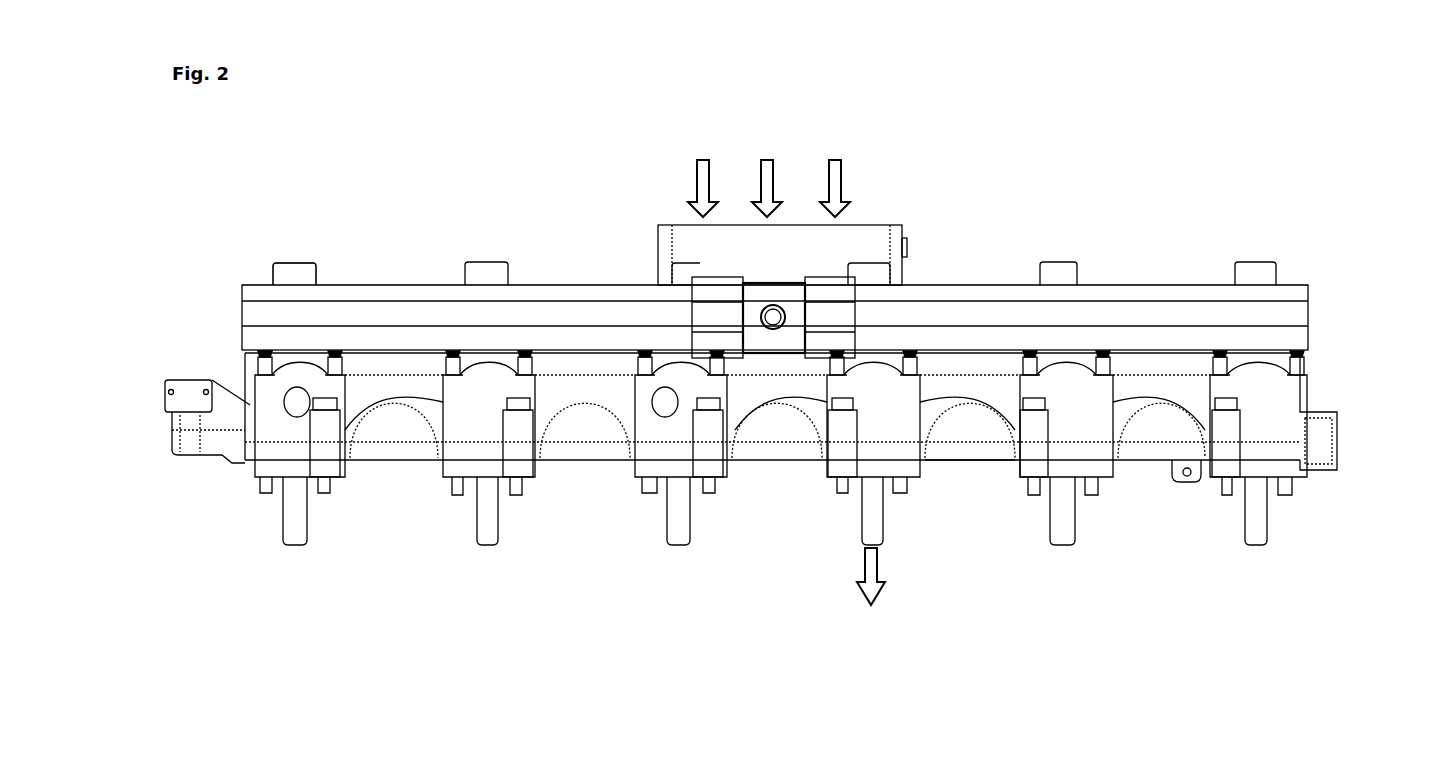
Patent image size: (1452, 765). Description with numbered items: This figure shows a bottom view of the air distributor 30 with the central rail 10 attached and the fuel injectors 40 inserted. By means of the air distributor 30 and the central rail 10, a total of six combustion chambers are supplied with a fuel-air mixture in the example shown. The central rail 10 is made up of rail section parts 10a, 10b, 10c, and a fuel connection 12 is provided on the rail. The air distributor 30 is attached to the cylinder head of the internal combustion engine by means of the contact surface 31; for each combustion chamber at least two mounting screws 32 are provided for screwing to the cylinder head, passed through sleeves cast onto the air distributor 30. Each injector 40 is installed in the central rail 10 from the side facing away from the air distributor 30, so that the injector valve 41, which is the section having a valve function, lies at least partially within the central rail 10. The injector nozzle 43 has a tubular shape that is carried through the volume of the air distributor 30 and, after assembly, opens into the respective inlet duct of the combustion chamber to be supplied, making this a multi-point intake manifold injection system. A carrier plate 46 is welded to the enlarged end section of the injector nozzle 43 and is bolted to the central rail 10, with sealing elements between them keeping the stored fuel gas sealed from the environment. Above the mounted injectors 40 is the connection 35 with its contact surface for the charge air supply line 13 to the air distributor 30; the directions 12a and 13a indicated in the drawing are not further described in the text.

The central rail 10 is at (1333, 317).
The rail section part 10a is at (418, 325).
The rail section part 10b is at (993, 325).
The rail section part 10c is at (745, 295).
The fuel connection 12 is at (787, 305).
The central fixing direction 12a is at (874, 591).
The charge air supply line 13 is at (769, 167).
The reaction force direction 13a is at (847, 507).
The air distributor 30 is at (1333, 390).
The contact surface of air distributor 31 is at (958, 470).
The mounting screws 32 is at (517, 498).
The connection for charge air supply 35 is at (688, 223).
The injector 40 is at (297, 240).
The injector valve 41 is at (297, 277).
The injector nozzle 43 is at (295, 517).
The carrier plate 46 is at (240, 352).